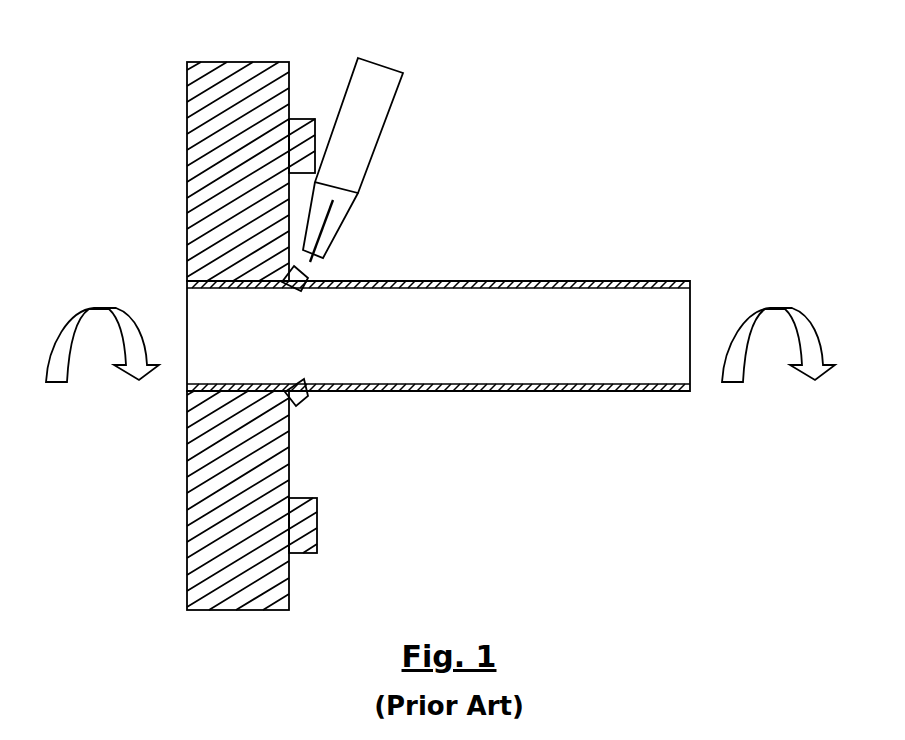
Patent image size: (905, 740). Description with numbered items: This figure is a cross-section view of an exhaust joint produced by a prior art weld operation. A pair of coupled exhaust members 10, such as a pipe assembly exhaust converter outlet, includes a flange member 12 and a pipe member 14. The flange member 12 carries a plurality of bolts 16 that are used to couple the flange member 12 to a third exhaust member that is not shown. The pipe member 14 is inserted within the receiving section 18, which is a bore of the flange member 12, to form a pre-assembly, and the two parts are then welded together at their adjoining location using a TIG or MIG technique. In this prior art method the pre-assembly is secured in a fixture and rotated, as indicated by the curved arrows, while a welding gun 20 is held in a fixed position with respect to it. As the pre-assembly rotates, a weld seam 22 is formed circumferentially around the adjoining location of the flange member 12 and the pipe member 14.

The pair of coupled exhaust members 10 is at (541, 118).
The flange member 12 is at (187, 231).
The pipe member 14 is at (502, 280).
The bolts 16 is at (303, 128).
The receiving section 18 is at (189, 386).
The welding gun 20 is at (373, 156).
The weld seam 22 is at (308, 390).